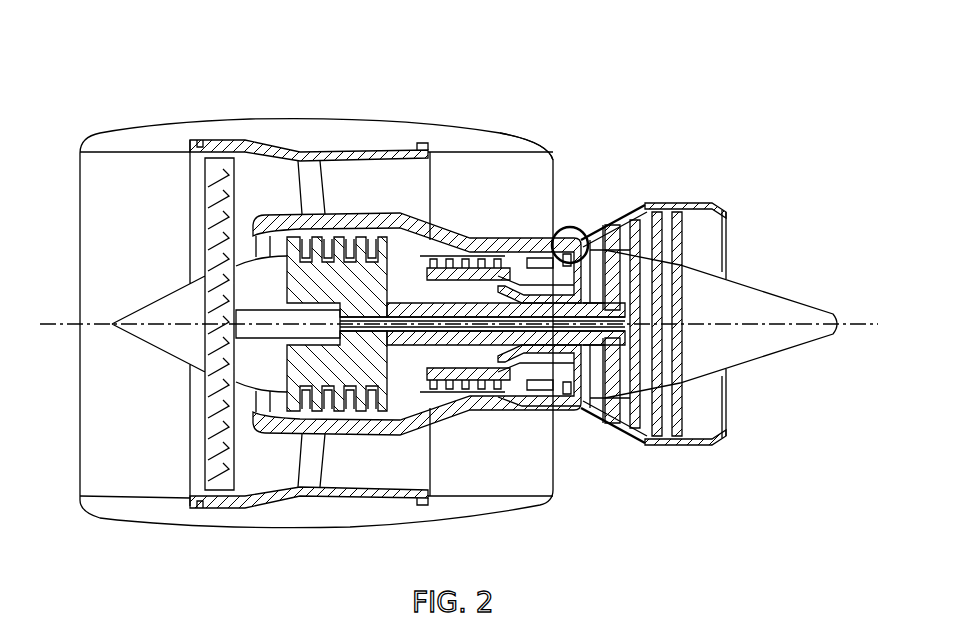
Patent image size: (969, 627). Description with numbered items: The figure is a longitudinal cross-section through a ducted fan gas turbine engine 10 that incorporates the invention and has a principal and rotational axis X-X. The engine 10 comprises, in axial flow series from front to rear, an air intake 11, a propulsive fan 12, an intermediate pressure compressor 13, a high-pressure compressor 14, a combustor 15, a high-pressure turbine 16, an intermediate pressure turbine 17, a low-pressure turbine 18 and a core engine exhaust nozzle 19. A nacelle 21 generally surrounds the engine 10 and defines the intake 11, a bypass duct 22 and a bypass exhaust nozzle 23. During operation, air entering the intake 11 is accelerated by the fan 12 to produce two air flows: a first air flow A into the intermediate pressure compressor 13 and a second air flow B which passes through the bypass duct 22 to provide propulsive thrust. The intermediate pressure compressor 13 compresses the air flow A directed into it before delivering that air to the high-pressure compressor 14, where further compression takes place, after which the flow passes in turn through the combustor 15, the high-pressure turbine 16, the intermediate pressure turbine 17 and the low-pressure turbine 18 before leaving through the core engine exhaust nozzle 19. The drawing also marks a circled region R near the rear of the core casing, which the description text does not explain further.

The ducted fan gas turbine engine 10 is at (124, 86).
The air intake 11 is at (129, 150).
The propulsive fan 12 is at (220, 450).
The intermediate pressure compressor 13 is at (350, 410).
The high-pressure compressor 14 is at (467, 240).
The combustor 15 is at (520, 390).
The high-pressure turbine 16 is at (573, 408).
The intermediate pressure turbine 17 is at (612, 220).
The low-pressure turbine 18 is at (620, 433).
The core engine exhaust nozzle 19 is at (710, 205).
The nacelle 21 is at (356, 132).
The bypass duct 22 is at (506, 189).
The bypass exhaust nozzle 23 is at (553, 148).
The first air flow A is at (252, 243).
The second air flow B is at (262, 188).
The region of detail R is at (565, 230).
The principal and rotational axis X is at (459, 307).